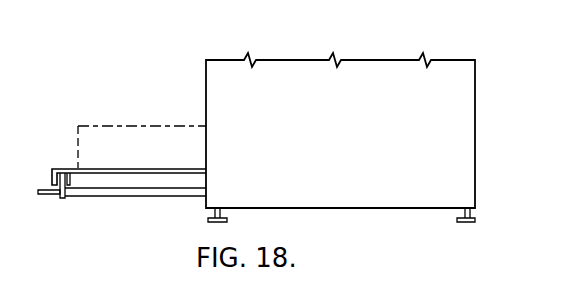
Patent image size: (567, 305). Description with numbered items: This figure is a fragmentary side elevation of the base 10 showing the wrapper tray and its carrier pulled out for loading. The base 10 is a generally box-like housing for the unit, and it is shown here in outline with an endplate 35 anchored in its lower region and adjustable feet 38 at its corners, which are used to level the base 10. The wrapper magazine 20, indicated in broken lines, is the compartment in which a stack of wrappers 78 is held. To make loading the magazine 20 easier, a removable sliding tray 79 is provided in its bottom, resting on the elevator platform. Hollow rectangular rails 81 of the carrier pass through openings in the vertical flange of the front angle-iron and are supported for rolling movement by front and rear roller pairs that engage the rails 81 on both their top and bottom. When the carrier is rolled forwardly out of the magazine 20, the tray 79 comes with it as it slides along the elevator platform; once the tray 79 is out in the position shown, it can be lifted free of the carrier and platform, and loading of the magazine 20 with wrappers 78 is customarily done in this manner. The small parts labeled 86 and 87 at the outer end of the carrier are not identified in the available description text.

The base 10 is at (239, 105).
The wrapper magazine 20 is at (140, 125).
The endplate 35 is at (327, 113).
The adjustable feet 38 is at (208, 216).
The stack of wrappers 78 is at (117, 125).
The removable sliding tray 79 is at (110, 168).
The hollow rectangular rails 81 is at (118, 190).
The stop block 86 is at (62, 199).
The tab 87 is at (45, 194).